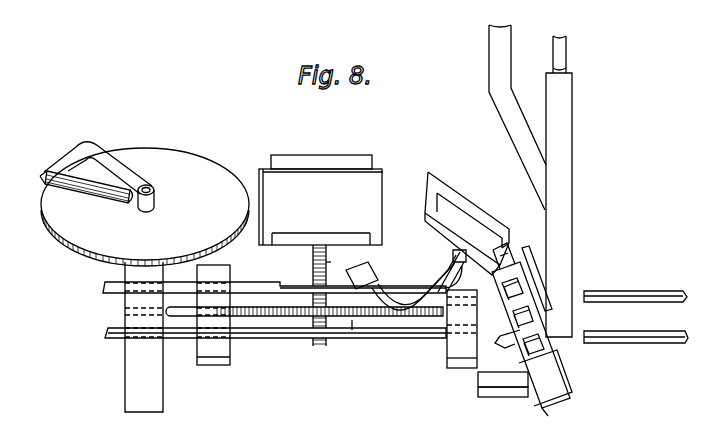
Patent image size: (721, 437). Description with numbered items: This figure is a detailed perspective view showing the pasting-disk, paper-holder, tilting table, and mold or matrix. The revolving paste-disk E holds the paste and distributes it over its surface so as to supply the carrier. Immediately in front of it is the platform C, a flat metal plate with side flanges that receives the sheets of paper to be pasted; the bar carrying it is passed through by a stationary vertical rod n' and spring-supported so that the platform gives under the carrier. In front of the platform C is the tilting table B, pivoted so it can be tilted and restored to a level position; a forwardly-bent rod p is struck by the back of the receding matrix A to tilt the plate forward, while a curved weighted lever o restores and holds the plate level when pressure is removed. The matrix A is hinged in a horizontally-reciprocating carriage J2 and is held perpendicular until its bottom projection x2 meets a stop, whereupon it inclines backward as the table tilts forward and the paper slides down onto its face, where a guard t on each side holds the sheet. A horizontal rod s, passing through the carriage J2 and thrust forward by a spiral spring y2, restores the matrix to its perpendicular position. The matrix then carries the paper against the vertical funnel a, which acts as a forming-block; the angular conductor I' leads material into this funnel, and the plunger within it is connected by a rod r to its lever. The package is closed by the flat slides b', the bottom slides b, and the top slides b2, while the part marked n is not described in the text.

The paste-disk E is at (144, 204).
The platform C is at (321, 200).
The tilting table B is at (467, 223).
The conductor I' is at (517, 117).
The rod r is at (567, 56).
The funnel a is at (559, 205).
The guard t is at (552, 322).
The slide b2 is at (640, 286).
The slide b is at (396, 339).
The stationary vertical rod n' is at (340, 257).
The flat slide b' is at (327, 295).
The curved weighted lever o is at (362, 275).
The forwardly-bent rod p is at (419, 280).
The horizontal rod s is at (304, 305).
The carriage J2 is at (222, 326).
The spiral spring y2 is at (352, 330).
The block n is at (503, 384).
The matrix A is at (552, 378).
The bottom projection x2 is at (547, 406).